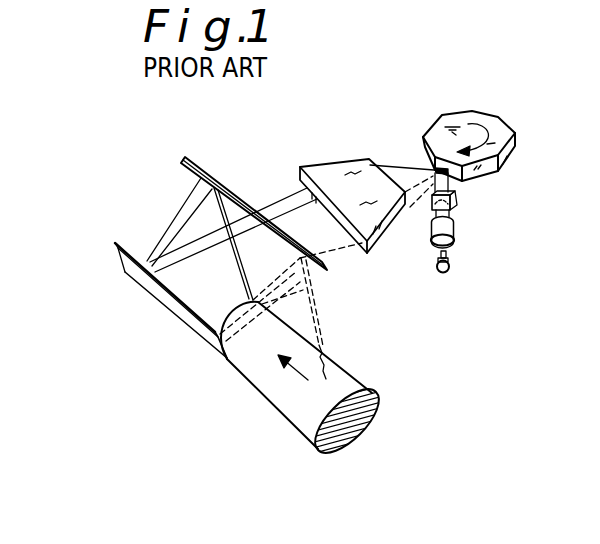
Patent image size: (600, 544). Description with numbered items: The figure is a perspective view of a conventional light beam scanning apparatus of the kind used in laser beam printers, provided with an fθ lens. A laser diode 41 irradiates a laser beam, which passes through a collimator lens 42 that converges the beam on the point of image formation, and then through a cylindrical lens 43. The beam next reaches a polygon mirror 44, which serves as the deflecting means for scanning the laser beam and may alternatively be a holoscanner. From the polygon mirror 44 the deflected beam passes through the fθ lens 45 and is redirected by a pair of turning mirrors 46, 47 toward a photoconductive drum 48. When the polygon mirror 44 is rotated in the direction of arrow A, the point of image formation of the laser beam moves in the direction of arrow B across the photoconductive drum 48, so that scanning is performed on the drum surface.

The laser diode 41 is at (450, 266).
The collimator lens 42 is at (455, 232).
The cylindrical lens 43 is at (456, 202).
The polygon mirror 44 is at (457, 117).
The fθ lens 45 is at (340, 172).
The turning mirror 46 is at (146, 300).
The turning mirror 47 is at (184, 160).
The photoconductive drum 48 is at (271, 391).